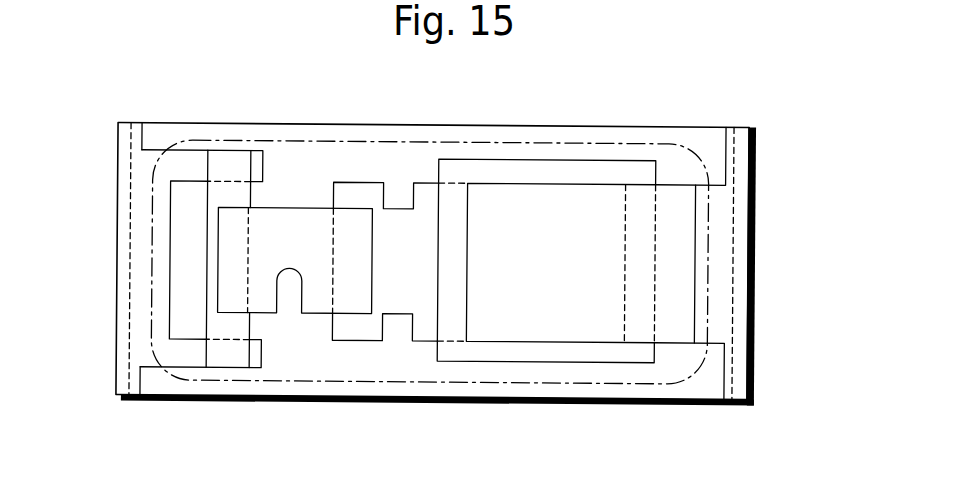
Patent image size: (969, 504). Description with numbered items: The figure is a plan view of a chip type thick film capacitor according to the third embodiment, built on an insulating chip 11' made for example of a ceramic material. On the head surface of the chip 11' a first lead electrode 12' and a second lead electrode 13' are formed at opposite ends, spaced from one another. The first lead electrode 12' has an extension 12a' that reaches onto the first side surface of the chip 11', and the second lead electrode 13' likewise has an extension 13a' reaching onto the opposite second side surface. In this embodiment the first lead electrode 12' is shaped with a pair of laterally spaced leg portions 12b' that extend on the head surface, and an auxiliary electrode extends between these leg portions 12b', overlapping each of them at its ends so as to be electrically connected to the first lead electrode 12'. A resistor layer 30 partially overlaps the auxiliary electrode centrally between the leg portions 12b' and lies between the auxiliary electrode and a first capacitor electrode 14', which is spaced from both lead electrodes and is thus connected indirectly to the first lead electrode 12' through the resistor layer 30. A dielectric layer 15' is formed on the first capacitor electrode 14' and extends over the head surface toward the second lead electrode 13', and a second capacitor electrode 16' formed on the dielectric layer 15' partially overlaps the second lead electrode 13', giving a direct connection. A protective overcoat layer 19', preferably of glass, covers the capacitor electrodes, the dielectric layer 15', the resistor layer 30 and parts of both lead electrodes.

The insulating chip 11' is at (436, 229).
The first lead electrode 12' is at (147, 259).
The extension 12a' is at (81, 259).
The leg portions 12b' is at (229, 268).
The second lead electrode 13' is at (739, 263).
The extension 13a' is at (748, 263).
The first capacitor electrode 14' is at (399, 198).
The dielectric layer 15' is at (546, 209).
The second capacitor electrode 16' is at (572, 200).
The protective overcoat layer 19' is at (430, 312).
The resistor layer 30 is at (295, 237).